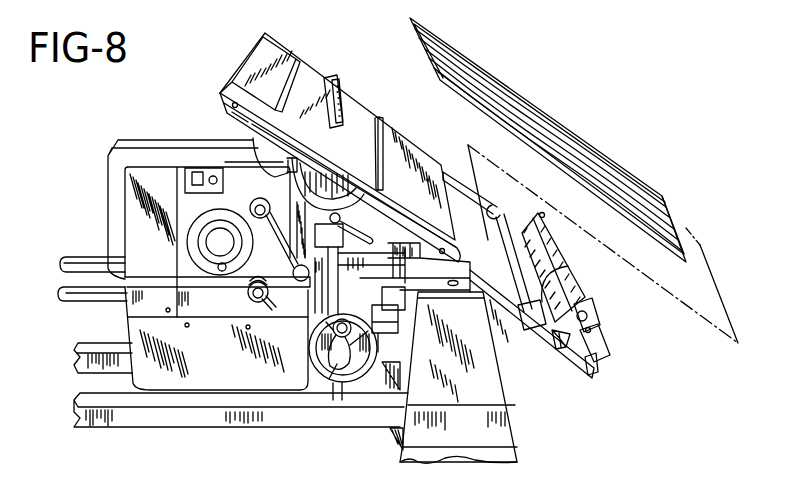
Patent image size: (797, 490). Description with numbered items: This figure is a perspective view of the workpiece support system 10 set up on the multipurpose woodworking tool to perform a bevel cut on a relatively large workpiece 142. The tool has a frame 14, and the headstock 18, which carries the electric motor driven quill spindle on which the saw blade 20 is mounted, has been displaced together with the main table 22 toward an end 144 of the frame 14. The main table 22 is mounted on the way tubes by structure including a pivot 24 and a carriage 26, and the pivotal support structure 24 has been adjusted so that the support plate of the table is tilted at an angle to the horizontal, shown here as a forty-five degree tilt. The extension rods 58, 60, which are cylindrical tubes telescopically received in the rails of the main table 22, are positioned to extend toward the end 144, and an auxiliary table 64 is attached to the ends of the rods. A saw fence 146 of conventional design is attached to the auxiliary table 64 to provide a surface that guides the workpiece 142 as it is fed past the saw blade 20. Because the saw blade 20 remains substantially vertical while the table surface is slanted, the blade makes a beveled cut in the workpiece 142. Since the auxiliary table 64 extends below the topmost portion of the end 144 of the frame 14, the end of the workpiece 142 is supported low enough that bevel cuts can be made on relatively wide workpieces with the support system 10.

The workpiece support system 10 is at (323, 57).
The frame 14 is at (518, 428).
The headstock 18 is at (158, 180).
The saw blade 20 is at (334, 80).
The main table 22 is at (406, 149).
The pivot 24 is at (263, 158).
The carriage 26 is at (275, 50).
The extension rod 58 is at (450, 177).
The extension rod 60 is at (488, 287).
The auxiliary table 64 is at (542, 264).
The workpiece 142 is at (545, 128).
The end of the frame 144 is at (490, 364).
The saw fence 146 is at (582, 334).